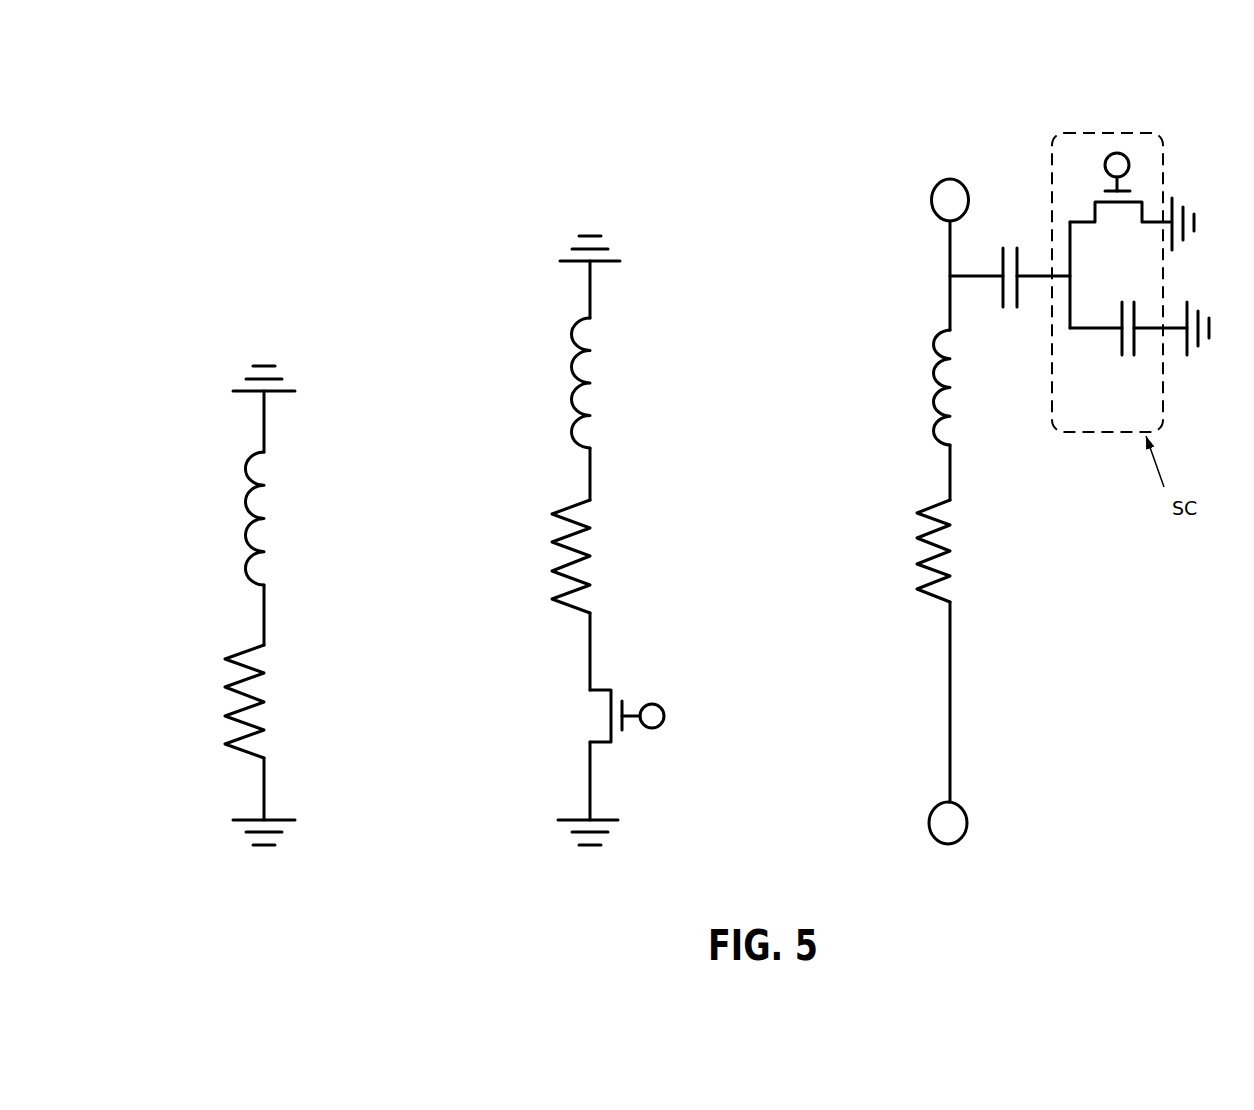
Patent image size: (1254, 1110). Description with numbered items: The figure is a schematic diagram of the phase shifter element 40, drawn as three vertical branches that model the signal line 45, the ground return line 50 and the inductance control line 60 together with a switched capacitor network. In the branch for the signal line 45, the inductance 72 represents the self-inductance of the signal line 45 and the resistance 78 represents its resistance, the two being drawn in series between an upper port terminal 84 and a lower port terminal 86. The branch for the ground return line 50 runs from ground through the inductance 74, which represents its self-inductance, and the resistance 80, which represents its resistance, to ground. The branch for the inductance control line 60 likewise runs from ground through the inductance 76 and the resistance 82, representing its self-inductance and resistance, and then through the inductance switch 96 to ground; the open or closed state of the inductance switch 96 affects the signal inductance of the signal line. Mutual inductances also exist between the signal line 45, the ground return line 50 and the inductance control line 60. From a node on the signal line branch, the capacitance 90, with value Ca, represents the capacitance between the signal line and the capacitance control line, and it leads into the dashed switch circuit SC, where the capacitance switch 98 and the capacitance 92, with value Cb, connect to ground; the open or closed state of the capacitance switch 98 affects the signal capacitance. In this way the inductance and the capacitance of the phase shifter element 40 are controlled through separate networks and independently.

The phase shifter element 40 is at (276, 157).
The signal line 45 is at (948, 693).
The ground return line 50 is at (186, 407).
The inductance control line 60 is at (511, 281).
The inductance 72 is at (903, 386).
The inductance 74 is at (200, 518).
The inductance 76 is at (525, 372).
The resistance 78 is at (900, 543).
The resistance 80 is at (200, 698).
The resistance 82 is at (525, 560).
The input port 84 is at (943, 180).
The output port 86 is at (958, 843).
The capacitance 90 is at (1012, 312).
The capacitance 92 is at (1145, 365).
The inductance switch 96 is at (563, 710).
The capacitance switch 98 is at (1112, 142).